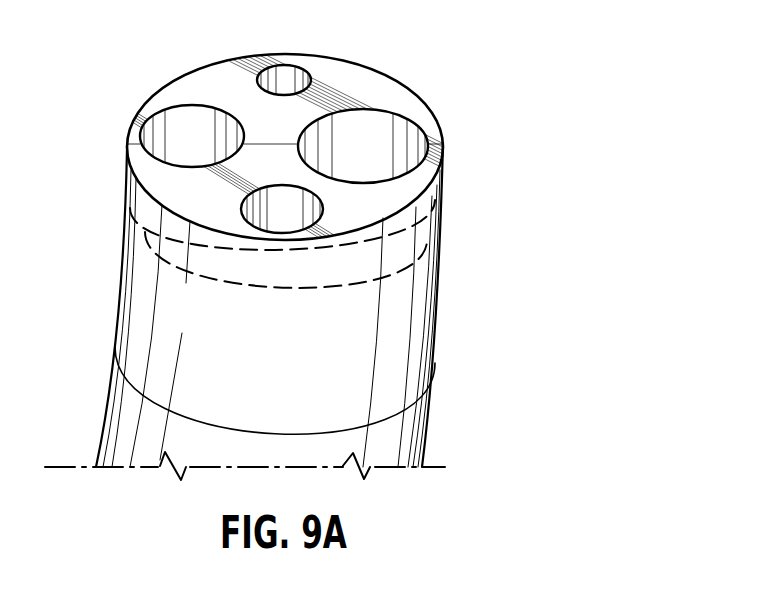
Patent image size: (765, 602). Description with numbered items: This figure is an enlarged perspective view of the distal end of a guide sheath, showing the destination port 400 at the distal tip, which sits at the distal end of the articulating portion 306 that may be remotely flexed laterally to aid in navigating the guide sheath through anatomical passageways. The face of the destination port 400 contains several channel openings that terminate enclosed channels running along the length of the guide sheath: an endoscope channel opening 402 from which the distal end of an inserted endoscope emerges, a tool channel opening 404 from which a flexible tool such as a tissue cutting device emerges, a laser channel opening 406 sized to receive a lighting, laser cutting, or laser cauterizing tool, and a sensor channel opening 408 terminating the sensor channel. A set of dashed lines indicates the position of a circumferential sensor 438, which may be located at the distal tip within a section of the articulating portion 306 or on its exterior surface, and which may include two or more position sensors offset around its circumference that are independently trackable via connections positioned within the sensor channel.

The destination port 400 is at (331, 242).
The endoscope channel opening 402 is at (162, 135).
The tool channel opening 404 is at (403, 140).
The laser channel opening 406 is at (297, 220).
The sensor channel opening 408 is at (282, 82).
The circumferential sensor 438 is at (147, 215).
The articulating portion 306 is at (142, 443).